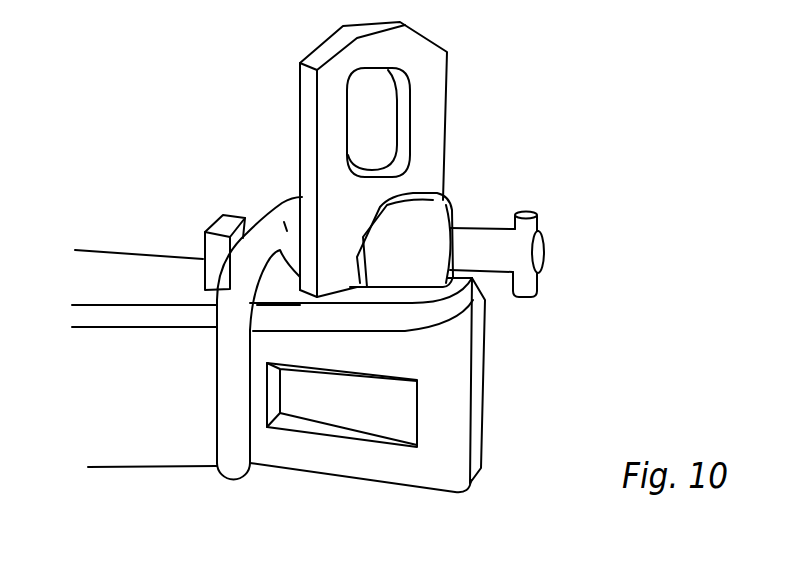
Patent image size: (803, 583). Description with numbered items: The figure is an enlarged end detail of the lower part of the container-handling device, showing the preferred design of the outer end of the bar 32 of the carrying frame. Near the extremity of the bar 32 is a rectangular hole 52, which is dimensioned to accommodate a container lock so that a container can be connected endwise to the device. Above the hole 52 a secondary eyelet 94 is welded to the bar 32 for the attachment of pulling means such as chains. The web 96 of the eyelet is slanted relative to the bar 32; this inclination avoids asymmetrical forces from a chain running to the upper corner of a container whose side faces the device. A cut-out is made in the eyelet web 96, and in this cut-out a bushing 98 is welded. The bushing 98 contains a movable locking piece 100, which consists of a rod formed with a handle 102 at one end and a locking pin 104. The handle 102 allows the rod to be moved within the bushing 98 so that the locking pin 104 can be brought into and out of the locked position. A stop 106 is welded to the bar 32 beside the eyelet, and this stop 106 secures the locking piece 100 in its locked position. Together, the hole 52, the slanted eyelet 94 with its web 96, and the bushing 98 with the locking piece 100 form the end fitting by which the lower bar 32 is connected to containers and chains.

The bar 32 is at (112, 267).
The rectangular hole 52 is at (403, 398).
The secondary eyelet 94 is at (360, 127).
The eyelet web 96 is at (430, 90).
The bushing 98 is at (432, 218).
The locking piece 100 is at (549, 222).
The handle 102 is at (230, 402).
The locking pin 104 is at (527, 285).
The stop 106 is at (223, 230).